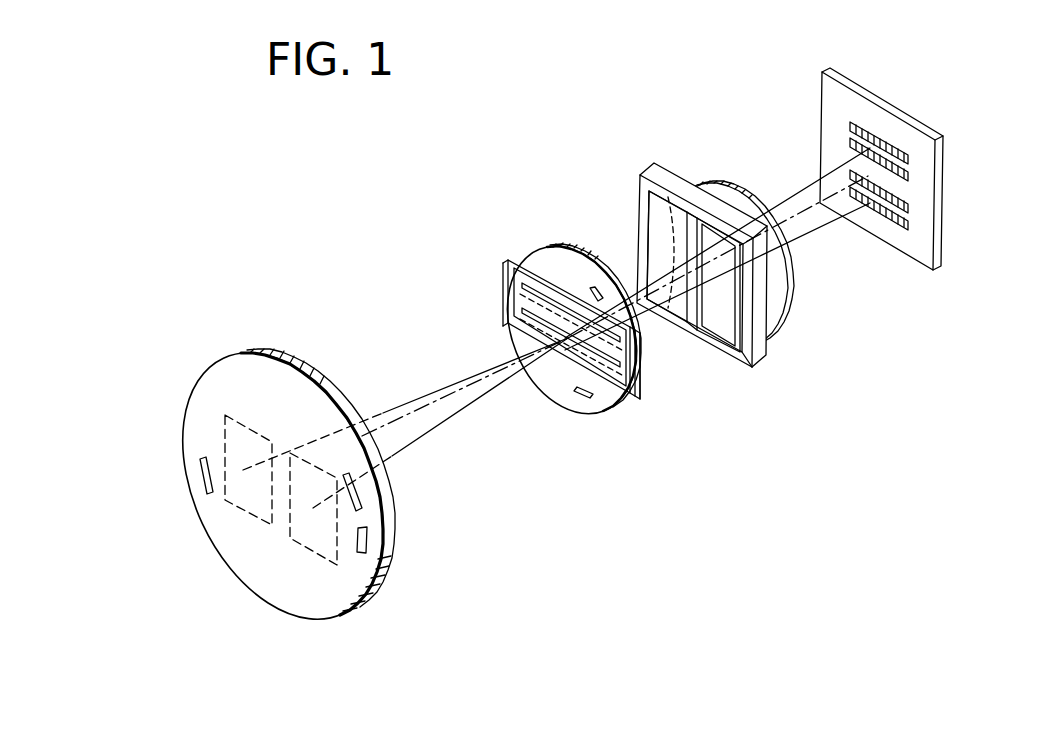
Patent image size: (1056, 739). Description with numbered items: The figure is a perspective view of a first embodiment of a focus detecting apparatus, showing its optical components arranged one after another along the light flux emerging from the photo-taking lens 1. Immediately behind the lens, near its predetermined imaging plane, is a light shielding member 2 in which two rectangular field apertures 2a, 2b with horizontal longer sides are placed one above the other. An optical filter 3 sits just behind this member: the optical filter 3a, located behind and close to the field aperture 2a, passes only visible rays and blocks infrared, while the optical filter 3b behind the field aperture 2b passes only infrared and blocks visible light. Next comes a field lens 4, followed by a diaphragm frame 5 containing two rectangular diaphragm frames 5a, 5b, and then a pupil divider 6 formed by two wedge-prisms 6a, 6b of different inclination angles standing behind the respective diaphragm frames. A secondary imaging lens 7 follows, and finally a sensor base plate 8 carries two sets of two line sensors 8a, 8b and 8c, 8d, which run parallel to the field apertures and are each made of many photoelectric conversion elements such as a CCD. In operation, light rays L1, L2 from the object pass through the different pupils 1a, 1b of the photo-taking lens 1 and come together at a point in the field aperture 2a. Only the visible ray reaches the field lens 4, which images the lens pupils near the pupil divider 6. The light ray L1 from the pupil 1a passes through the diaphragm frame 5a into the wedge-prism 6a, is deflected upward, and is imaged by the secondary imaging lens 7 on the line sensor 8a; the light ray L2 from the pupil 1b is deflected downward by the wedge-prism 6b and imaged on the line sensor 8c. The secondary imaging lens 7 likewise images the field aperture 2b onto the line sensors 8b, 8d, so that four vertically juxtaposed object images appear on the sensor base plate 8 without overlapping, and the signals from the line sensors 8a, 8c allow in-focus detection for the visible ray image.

The photo-taking lens 1 is at (237, 372).
The pupil of the photo-taking lens 1a is at (238, 444).
The pupil of the photo-taking lens 1b is at (340, 563).
The light shielding member 2 is at (505, 283).
The field aperture 2a is at (526, 314).
The field aperture 2b is at (526, 290).
The optical filter 3 is at (693, 406).
The optical filter 3a is at (642, 382).
The optical filter 3b is at (638, 372).
The field lens 4 is at (543, 260).
The diaphragm frame 5 is at (638, 180).
The diaphragm frame 5a is at (644, 244).
The diaphragm frame 5b is at (733, 360).
The pupil divider 6 is at (676, 170).
The wedge-prism 6a is at (660, 212).
The wedge-prism 6b is at (762, 332).
The secondary imaging lens 7 is at (725, 180).
The sensor base plate 8 is at (851, 108).
The line sensor 8a is at (897, 140).
The line sensor 8b is at (912, 172).
The line sensor 8c is at (912, 200).
The line sensor 8d is at (892, 225).
The light ray L1 is at (405, 408).
The light ray L2 is at (455, 420).